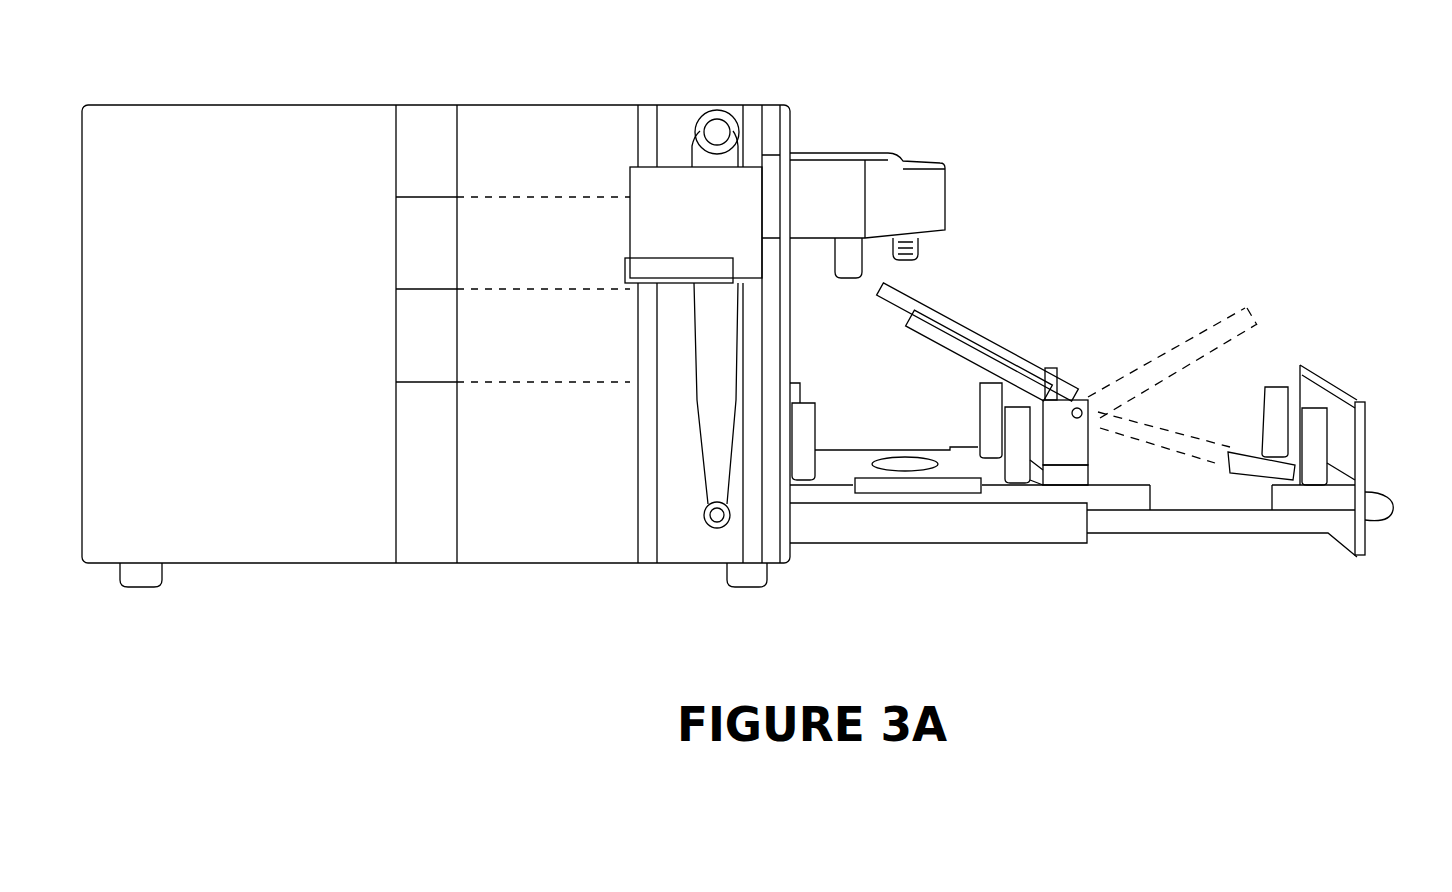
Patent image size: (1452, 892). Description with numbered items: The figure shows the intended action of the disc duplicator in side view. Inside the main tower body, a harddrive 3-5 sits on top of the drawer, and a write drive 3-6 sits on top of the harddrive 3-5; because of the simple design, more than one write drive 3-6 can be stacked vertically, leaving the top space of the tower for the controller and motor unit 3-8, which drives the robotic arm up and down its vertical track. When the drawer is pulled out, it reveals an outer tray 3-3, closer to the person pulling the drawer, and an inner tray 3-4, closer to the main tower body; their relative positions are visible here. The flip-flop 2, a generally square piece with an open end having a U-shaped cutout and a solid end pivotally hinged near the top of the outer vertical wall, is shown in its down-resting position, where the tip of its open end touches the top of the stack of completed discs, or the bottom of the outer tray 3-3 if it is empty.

The flip-flop 2 is at (1025, 346).
The outer tray 3-3 is at (1221, 500).
The inner tray 3-4 is at (968, 461).
The harddrive 3-5 is at (388, 350).
The write drive 3-6 is at (388, 248).
The controller and motor unit 3-8 is at (680, 135).